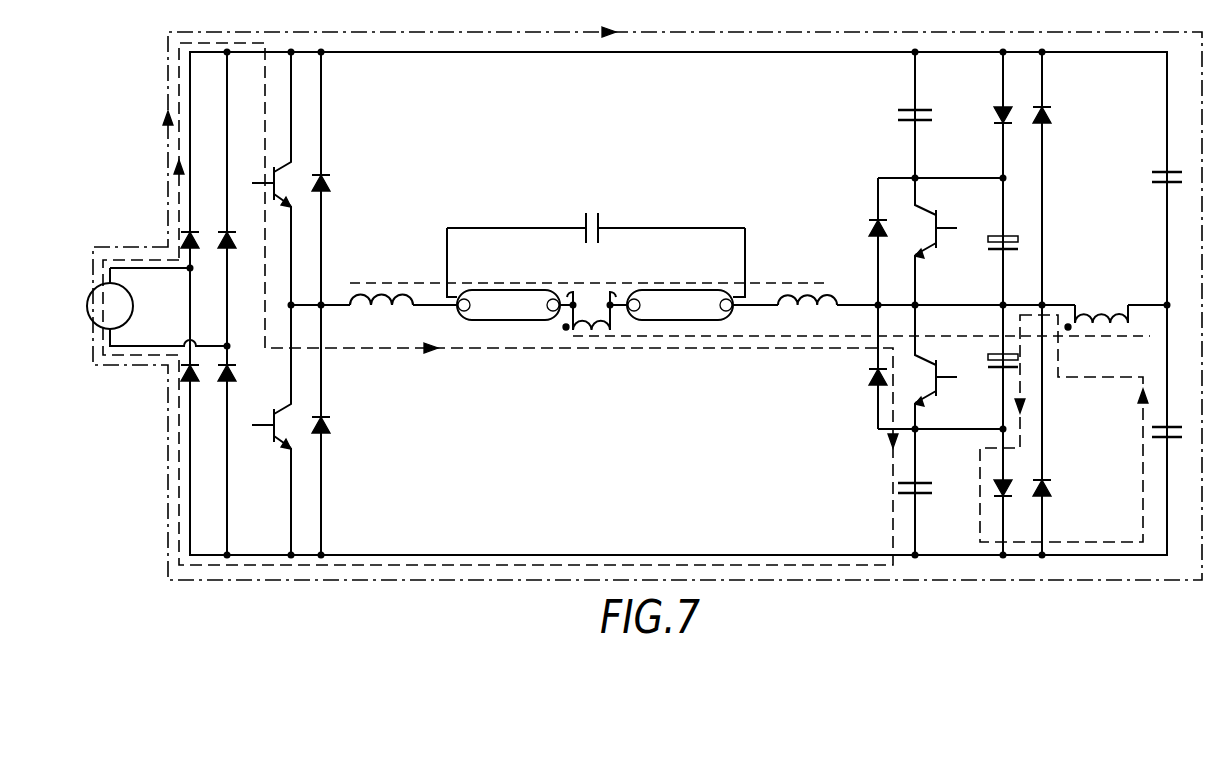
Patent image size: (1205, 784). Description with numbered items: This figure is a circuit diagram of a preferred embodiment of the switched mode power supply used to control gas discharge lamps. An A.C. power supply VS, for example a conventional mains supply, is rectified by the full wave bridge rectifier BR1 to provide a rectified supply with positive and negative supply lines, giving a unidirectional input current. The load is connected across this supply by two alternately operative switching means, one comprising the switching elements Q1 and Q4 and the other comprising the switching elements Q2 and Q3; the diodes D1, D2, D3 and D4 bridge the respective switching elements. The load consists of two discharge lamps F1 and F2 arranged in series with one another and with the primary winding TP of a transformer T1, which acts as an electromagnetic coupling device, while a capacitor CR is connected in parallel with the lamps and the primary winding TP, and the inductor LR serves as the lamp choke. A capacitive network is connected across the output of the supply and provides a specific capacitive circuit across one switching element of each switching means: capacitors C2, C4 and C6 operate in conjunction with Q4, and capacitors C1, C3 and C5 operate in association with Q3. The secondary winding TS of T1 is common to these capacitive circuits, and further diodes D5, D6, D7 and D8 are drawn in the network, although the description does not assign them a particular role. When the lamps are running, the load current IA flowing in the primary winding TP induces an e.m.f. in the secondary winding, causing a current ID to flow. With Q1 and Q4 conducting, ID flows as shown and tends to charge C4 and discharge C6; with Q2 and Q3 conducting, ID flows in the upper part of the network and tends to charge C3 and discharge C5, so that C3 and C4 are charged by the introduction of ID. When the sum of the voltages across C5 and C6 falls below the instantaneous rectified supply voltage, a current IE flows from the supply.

The A.C. power supply VS is at (157, 307).
The bridge BR1 is at (208, 303).
The switching element Q1 is at (277, 178).
The switching element Q2 is at (277, 430).
The switching element Q3 is at (929, 178).
The switching element Q4 is at (929, 430).
The diode D1 is at (336, 185).
The diode D2 is at (336, 427).
The diode D3 is at (861, 231).
The diode D4 is at (861, 381).
The diode D5 is at (986, 116).
The diode D6 is at (986, 490).
The diode D7 is at (1058, 116).
The diode D8 is at (1057, 490).
The capacitor C1 is at (901, 116).
The capacitor C2 is at (896, 491).
The capacitor C3 is at (990, 252).
The capacitor C4 is at (989, 367).
The capacitor C5 is at (1173, 192).
The capacitor C6 is at (1173, 446).
The capacitor CR is at (596, 242).
The inductor LR is at (381, 283).
The discharge lamp F1 is at (508, 305).
The discharge lamp F2 is at (680, 305).
The primary winding TP is at (589, 330).
The transformer T1 is at (789, 330).
The secondary winding TS is at (1096, 334).
The load current IA is at (500, 304).
The current IE is at (647, 292).
The current ID is at (1064, 428).